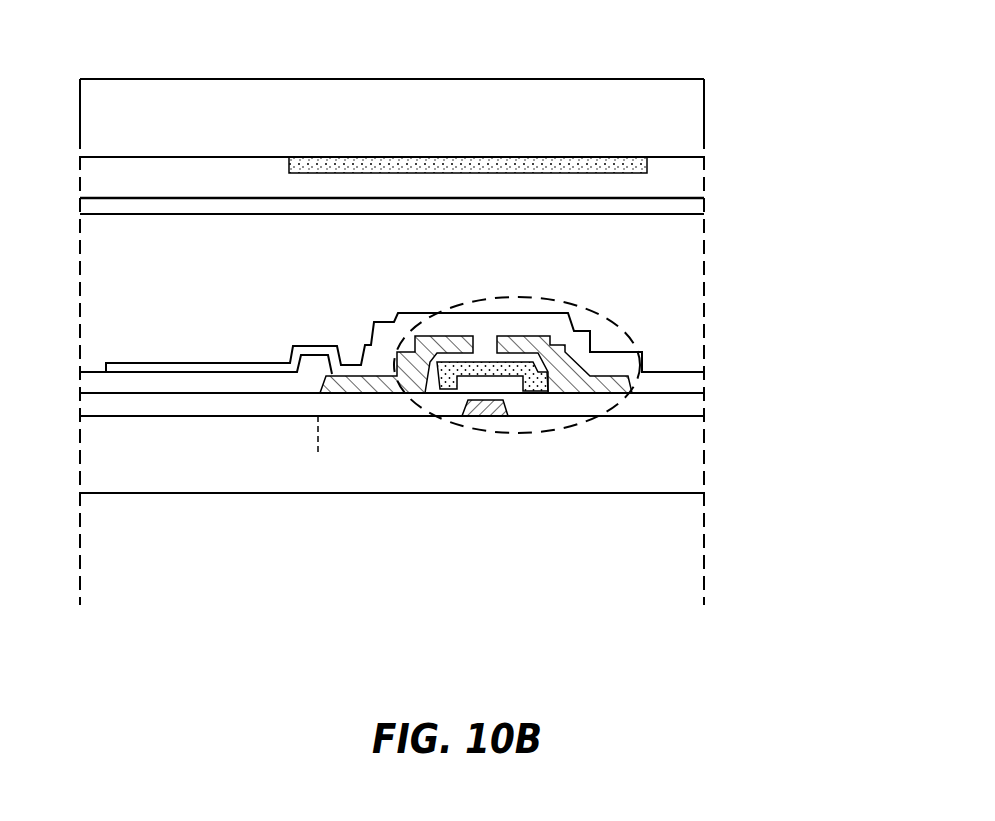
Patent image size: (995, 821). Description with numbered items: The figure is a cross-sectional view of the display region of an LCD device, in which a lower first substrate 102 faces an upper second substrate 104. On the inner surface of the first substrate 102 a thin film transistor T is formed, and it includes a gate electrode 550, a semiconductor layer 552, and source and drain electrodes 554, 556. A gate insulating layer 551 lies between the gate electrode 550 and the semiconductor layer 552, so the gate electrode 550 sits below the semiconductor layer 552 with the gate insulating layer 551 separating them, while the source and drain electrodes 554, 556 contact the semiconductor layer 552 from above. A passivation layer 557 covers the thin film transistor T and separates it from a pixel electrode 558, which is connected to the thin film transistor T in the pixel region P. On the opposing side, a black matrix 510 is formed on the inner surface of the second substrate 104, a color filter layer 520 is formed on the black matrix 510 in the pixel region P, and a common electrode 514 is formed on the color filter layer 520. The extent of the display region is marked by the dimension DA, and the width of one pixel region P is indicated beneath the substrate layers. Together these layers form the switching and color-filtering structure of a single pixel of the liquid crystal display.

The second substrate 104 is at (681, 139).
The black matrix 510 is at (402, 155).
The color filter layer 520 is at (235, 180).
The common electrode 514 is at (136, 207).
The first substrate 102 is at (682, 472).
The gate insulating layer 551 is at (680, 404).
The gate electrode 550 is at (490, 413).
The semiconductor layer 552 is at (418, 375).
The source electrode 554 is at (450, 345).
The drain electrode 556 is at (533, 345).
The passivation layer 557 is at (677, 382).
The pixel electrode 558 is at (198, 365).
The thin film transistor T is at (590, 310).
The pixel region P is at (318, 443).
The display area DA is at (704, 577).